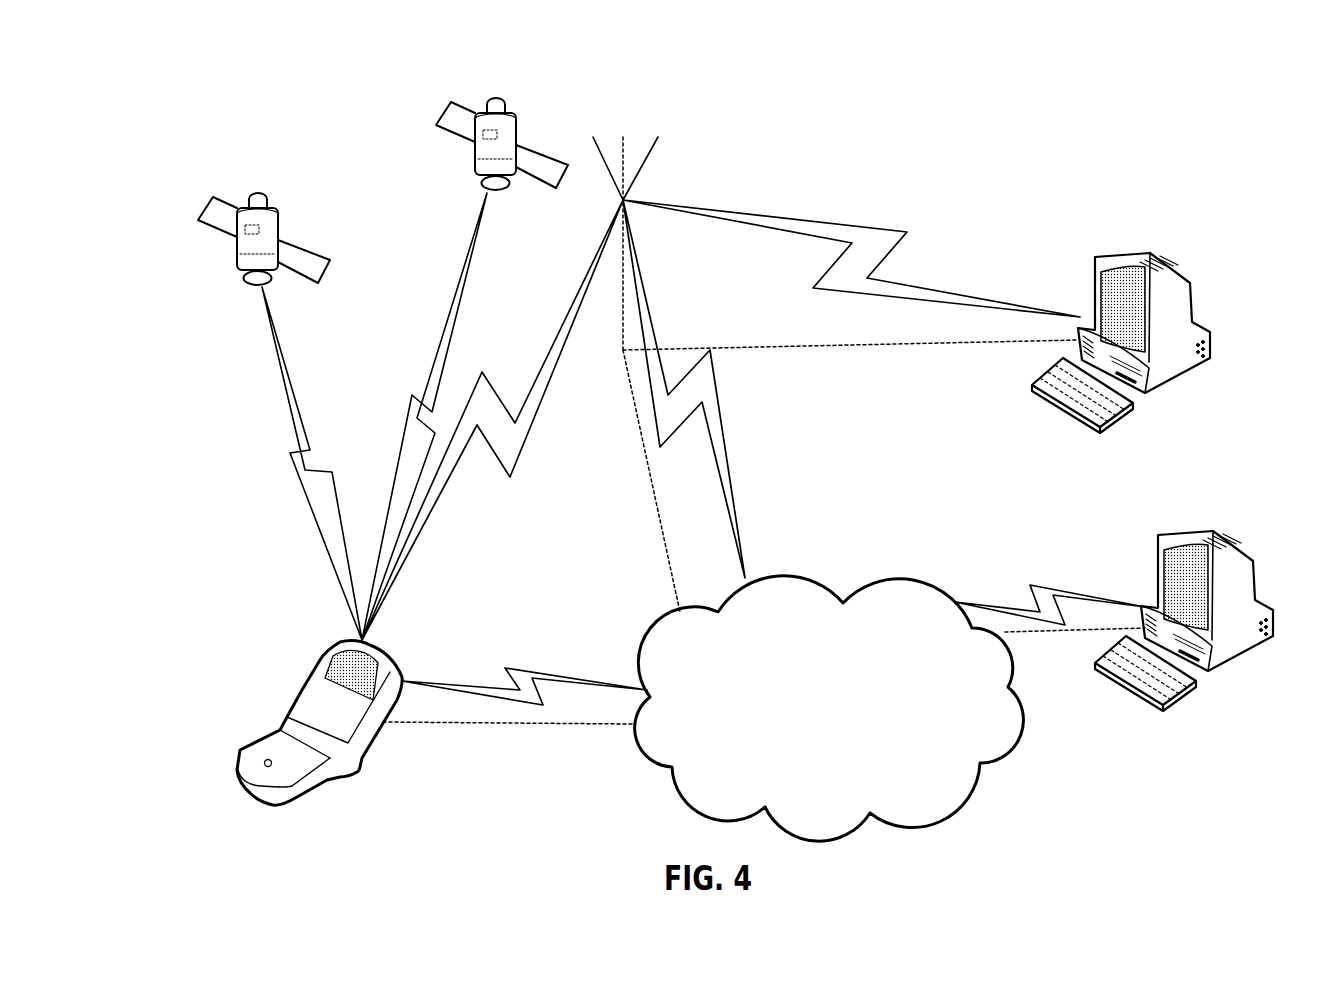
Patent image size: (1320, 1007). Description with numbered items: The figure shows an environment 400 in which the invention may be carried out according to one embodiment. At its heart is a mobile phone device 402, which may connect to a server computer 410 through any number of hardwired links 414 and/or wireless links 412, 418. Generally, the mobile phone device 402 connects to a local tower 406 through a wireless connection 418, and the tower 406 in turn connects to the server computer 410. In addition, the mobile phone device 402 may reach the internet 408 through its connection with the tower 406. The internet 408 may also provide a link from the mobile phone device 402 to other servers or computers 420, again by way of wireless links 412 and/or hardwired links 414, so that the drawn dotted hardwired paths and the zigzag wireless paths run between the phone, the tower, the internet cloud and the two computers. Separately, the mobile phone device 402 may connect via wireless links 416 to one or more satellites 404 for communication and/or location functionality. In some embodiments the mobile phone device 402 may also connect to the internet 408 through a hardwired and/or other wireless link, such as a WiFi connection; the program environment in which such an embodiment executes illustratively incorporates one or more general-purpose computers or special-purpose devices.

The positioning system 400 is at (824, 120).
The mobile phone device 402 is at (325, 662).
The satellites 404 is at (243, 192).
The local tower 406 is at (622, 350).
The internet 408 is at (828, 578).
The server computer 410 is at (1098, 255).
The wireless links 412 is at (948, 300).
The hardwired links 414 is at (790, 349).
The wireless links 416 is at (290, 363).
The wireless connection 418 is at (520, 468).
The other servers or computers 420 is at (1192, 532).